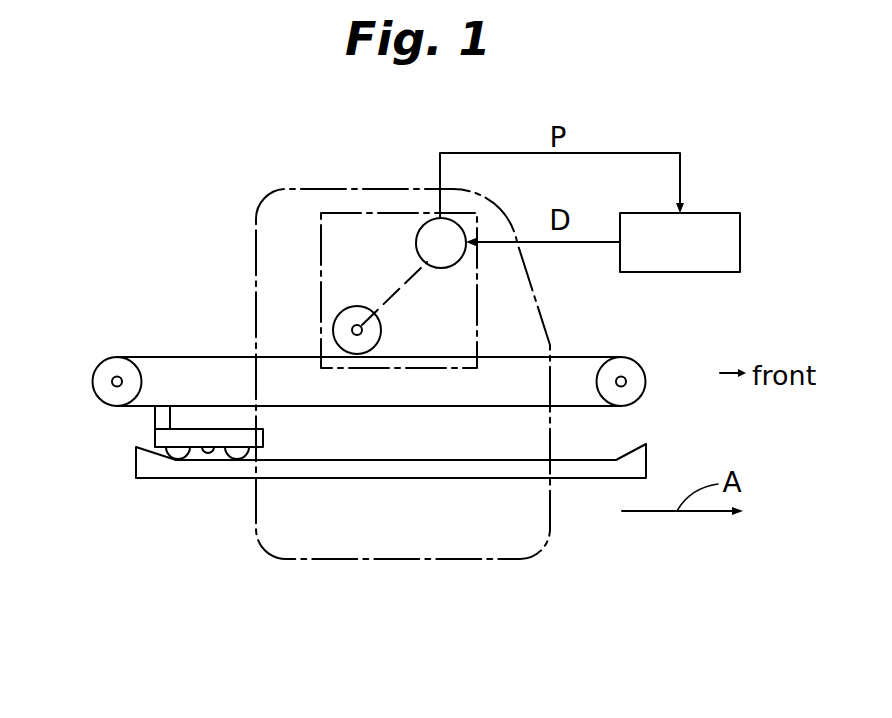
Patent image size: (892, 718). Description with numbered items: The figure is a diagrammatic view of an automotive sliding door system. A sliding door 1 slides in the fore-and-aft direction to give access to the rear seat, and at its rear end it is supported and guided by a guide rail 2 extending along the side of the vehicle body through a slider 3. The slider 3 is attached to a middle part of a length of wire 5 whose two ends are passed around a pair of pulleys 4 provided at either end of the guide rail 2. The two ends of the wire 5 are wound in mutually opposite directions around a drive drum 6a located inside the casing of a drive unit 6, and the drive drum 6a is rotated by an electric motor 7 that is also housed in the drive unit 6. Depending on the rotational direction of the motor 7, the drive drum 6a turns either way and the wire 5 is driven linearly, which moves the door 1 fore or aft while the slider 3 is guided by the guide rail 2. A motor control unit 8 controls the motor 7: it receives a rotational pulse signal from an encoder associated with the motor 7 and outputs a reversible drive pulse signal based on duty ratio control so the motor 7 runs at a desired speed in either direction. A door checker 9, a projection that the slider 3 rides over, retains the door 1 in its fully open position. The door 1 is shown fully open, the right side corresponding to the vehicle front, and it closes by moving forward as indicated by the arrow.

The sliding door 1 is at (415, 560).
The guide rail 2 is at (395, 479).
The slider 3 is at (241, 428).
The pulleys 4 is at (113, 359).
The wire 5 is at (280, 357).
The drive unit 6 is at (363, 213).
The drive drum 6a is at (356, 306).
The electric motor 7 is at (425, 222).
The motor control unit 8 is at (717, 272).
The door checker 9 is at (207, 447).